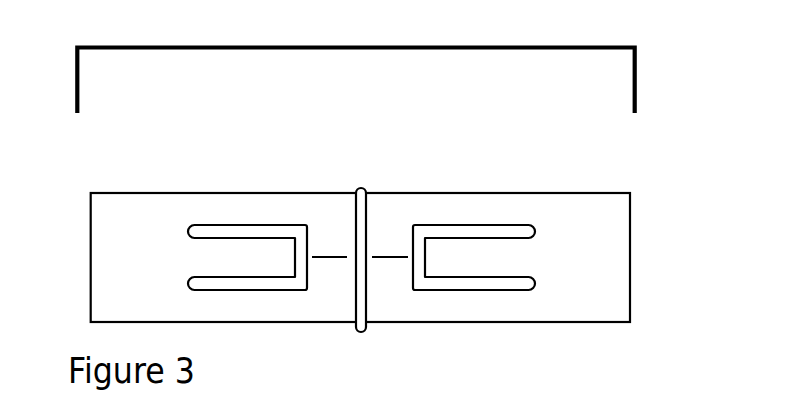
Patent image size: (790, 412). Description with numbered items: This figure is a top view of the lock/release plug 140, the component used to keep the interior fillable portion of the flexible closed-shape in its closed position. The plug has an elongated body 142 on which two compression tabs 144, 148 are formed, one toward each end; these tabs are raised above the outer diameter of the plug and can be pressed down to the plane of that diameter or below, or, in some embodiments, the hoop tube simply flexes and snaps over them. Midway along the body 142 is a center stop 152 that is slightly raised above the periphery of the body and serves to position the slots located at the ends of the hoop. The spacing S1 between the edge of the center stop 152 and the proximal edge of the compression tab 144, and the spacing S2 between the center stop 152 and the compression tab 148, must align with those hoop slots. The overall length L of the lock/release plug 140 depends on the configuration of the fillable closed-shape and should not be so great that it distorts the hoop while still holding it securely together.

The lock/release plug 140 is at (107, 165).
The body 142 is at (601, 203).
The compression tab 144 is at (453, 247).
The compression tab 148 is at (287, 262).
The center stop 152 is at (362, 187).
The spacing S1 is at (393, 257).
The spacing S2 is at (333, 258).
The length L is at (637, 53).